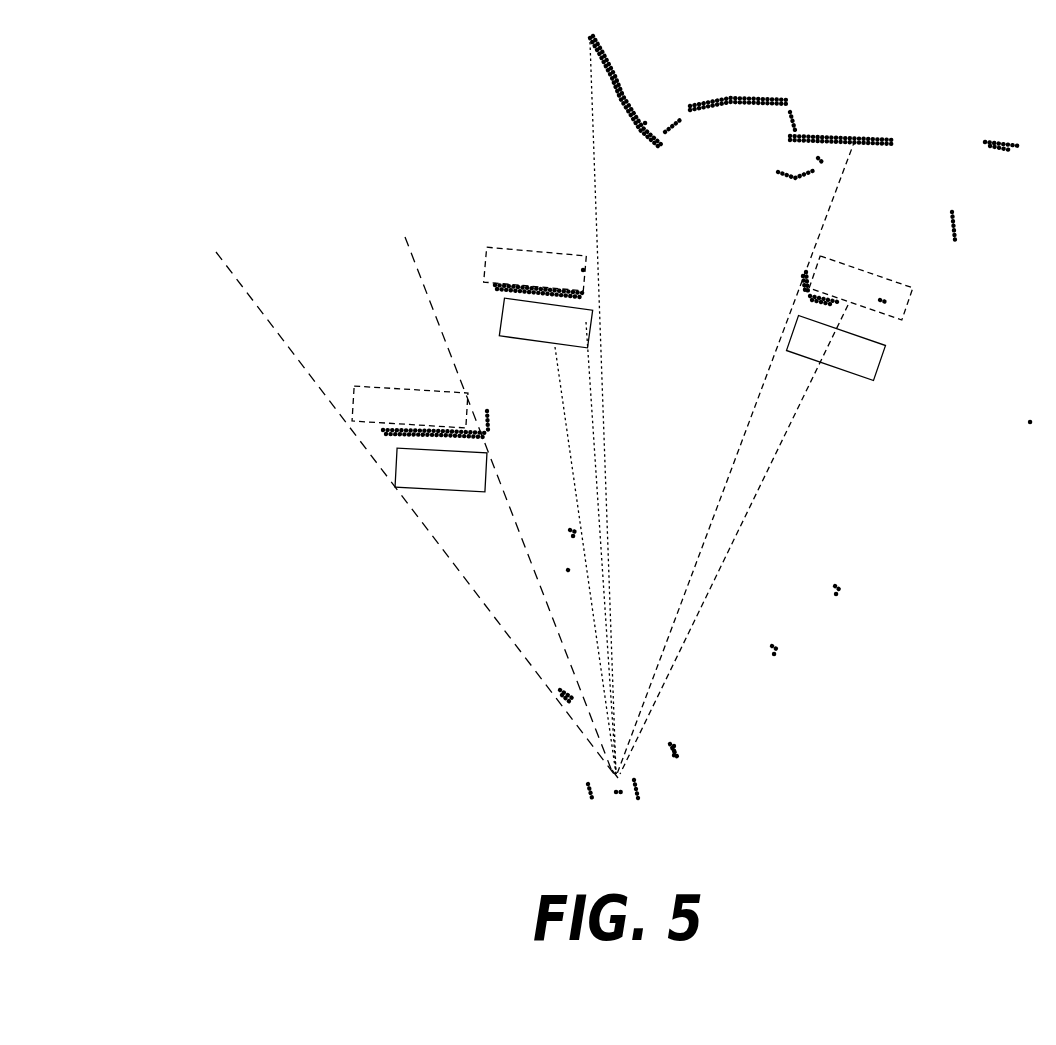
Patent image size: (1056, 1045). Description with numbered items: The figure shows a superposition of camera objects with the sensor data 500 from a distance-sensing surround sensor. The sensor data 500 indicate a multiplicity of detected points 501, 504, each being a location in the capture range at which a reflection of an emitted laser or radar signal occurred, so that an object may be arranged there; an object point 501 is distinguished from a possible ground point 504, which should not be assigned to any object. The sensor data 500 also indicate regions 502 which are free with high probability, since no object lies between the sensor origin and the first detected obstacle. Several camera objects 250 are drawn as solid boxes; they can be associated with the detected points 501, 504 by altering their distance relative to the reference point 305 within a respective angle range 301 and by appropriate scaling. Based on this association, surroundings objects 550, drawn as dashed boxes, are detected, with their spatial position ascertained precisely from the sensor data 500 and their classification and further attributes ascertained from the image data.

The sensor data 500 is at (290, 158).
The surroundings object 550 is at (403, 400).
The camera object 250 is at (585, 330).
The detected point (object point) 501 is at (664, 152).
The detected point (possible ground point) 504 is at (808, 295).
The free region 502 is at (778, 412).
The angle range 301 is at (549, 667).
The reference point 305 is at (612, 775).